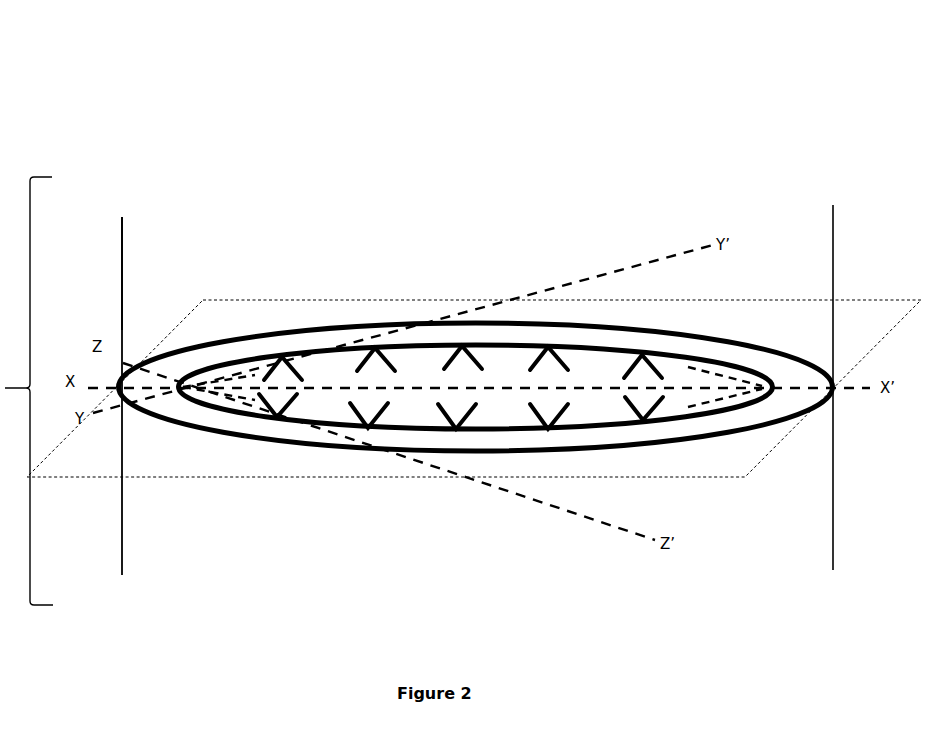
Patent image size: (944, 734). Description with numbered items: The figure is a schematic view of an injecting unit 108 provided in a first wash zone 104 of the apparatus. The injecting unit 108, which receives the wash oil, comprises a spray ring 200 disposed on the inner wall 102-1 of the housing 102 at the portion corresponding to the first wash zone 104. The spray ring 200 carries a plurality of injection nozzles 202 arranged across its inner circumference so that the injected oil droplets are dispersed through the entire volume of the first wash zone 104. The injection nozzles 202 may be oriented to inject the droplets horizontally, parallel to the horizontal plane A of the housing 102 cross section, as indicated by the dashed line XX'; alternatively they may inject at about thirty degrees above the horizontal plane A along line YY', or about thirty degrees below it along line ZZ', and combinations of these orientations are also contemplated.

The injecting unit 108 is at (199, 37).
The first wash zone 104 is at (36, 243).
The housing 102 is at (112, 522).
The inner wall 102-1 is at (132, 277).
The spray ring 200 is at (306, 458).
The injection nozzles 202 is at (649, 440).
The horizontal plane A is at (418, 482).